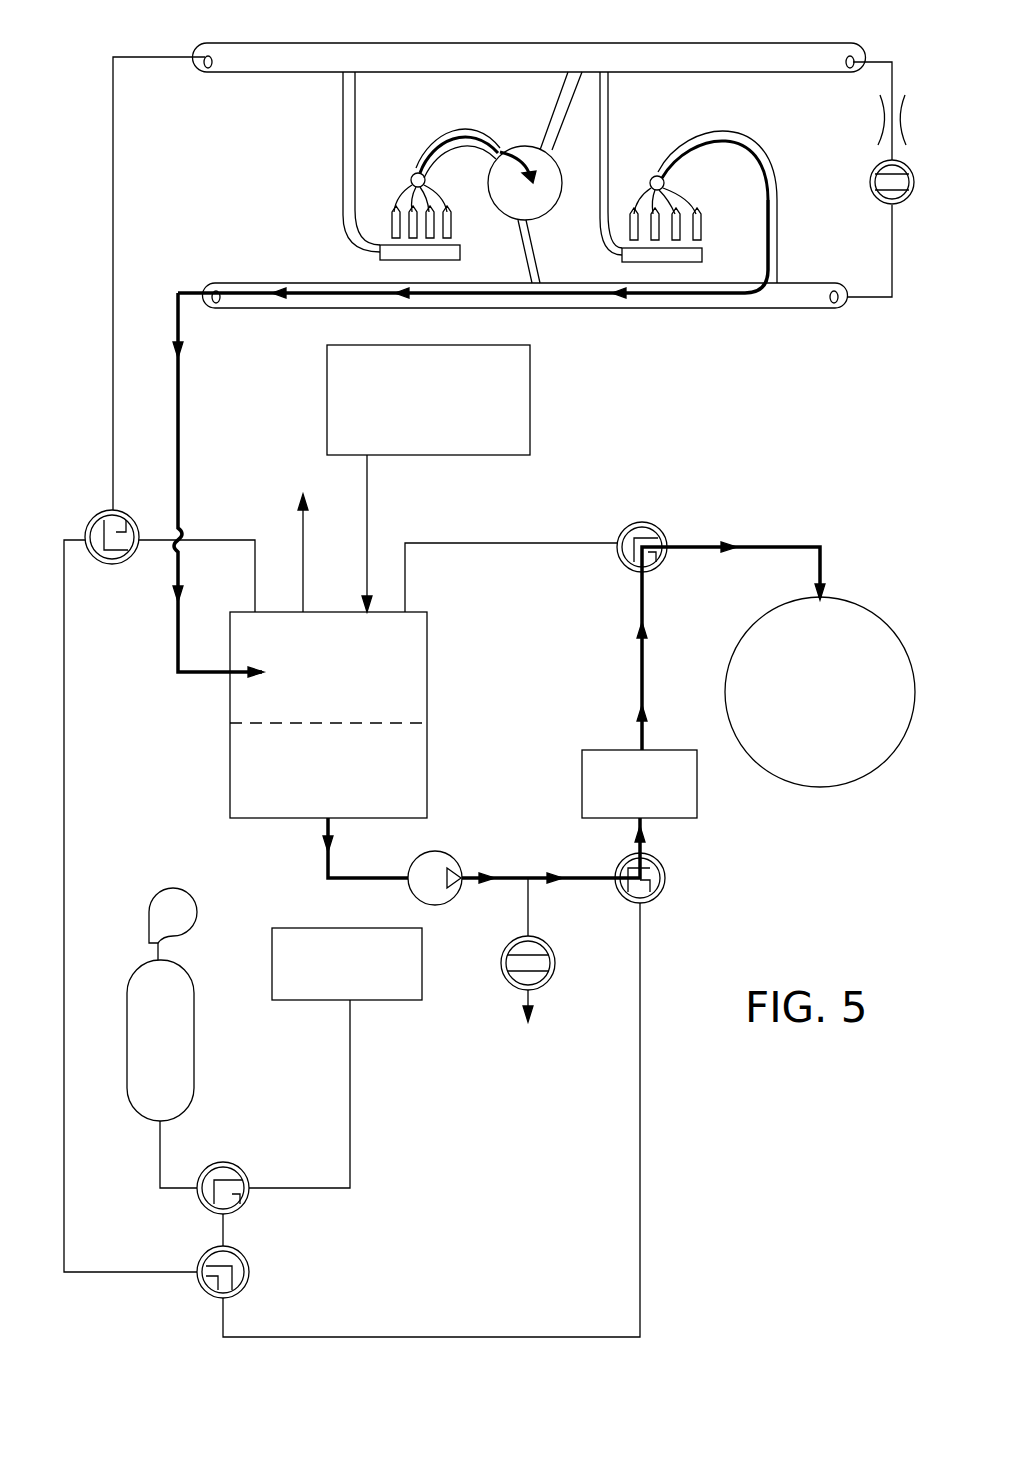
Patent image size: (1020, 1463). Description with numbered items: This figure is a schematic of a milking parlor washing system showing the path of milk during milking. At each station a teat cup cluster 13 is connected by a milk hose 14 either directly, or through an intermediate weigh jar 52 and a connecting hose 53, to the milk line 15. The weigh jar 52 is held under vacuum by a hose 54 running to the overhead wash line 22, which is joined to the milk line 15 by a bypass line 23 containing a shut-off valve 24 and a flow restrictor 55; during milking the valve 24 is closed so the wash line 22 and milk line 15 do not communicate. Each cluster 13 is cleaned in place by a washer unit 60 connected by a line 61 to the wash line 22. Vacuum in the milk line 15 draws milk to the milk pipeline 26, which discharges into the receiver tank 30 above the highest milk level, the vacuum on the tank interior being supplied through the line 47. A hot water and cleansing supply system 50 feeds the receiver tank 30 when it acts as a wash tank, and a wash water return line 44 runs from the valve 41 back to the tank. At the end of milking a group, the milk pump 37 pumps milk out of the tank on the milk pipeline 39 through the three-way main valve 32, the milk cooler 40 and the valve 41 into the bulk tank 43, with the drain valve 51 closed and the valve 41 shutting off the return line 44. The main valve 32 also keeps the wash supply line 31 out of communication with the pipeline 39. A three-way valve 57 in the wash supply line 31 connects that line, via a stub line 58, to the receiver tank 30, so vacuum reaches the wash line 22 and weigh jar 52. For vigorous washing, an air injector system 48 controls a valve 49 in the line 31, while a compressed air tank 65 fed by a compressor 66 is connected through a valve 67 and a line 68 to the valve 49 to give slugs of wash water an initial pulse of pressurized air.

The teat cup cluster 13 is at (416, 176).
The milk hose 14 is at (492, 138).
The milk line 15 is at (618, 310).
The wash line 22 is at (490, 43).
The bypass line 23 is at (890, 225).
The shut-off valve 24 is at (874, 166).
The milk pipeline 26 is at (180, 398).
The receiver tank 30 is at (428, 672).
The wash supply line 31 is at (115, 158).
The three-way main valve 32 is at (658, 900).
The milk pump 37 is at (460, 860).
The milk pipeline 39 is at (340, 832).
The milk cooler 40 is at (698, 800).
The valve 41 is at (662, 532).
The bulk tank 43 is at (838, 788).
The wash water return line 44 is at (504, 540).
The line 47 is at (304, 558).
The air injector system 48 is at (422, 966).
The valve 49 is at (204, 1252).
The hot water and cleansing supply system 50 is at (455, 345).
The automatic drain valve 51 is at (500, 966).
The weigh jar 52 is at (548, 196).
The hose 53 is at (545, 270).
The hose 54 is at (560, 92).
The flow restrictor 55 is at (880, 120).
The three-way valve 57 is at (128, 560).
The stub line 58 is at (233, 540).
The washer unit 60 is at (460, 252).
The line 61 is at (343, 140).
The compressed air tank 65 is at (195, 1072).
The compressor 66 is at (178, 890).
The valve 67 is at (236, 1168).
The line 68 is at (228, 1228).